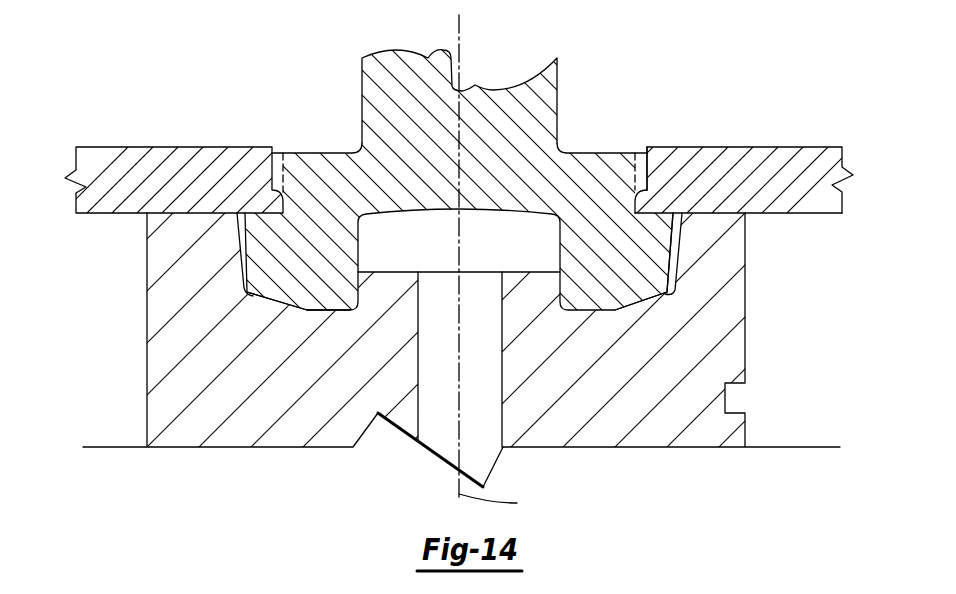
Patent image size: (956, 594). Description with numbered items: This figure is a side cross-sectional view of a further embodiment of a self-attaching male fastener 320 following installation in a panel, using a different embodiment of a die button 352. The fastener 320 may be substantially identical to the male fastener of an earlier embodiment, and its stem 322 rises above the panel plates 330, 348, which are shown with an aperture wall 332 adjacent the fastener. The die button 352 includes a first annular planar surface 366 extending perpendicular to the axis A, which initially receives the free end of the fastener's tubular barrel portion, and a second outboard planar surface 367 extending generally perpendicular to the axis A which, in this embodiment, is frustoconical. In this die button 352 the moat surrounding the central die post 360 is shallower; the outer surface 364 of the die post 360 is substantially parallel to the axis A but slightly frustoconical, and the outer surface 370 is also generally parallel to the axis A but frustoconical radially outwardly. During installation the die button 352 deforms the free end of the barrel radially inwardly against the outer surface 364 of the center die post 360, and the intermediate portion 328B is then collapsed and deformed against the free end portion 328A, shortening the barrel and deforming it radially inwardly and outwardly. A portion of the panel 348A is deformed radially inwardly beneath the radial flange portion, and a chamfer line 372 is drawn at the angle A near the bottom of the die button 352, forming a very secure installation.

The self-attaching male fastener 320 is at (478, 195).
The stem 322 is at (367, 100).
The first panel 330 is at (266, 168).
The panel aperture wall 332 is at (643, 168).
The second panel 348 is at (457, 143).
The portion of the panel 348A is at (640, 203).
The free end portion 328A is at (581, 308).
The intermediate portion 328B is at (253, 247).
The die button 352 is at (478, 362).
The central die post 360 is at (393, 282).
The outer surface of the die post 364 is at (610, 288).
The first annular planar surface 366 is at (325, 303).
The second outboard planar surface 367 is at (280, 298).
The outer surface 370 is at (668, 245).
The chamfer line 372 is at (428, 402).
The axis A is at (495, 503).